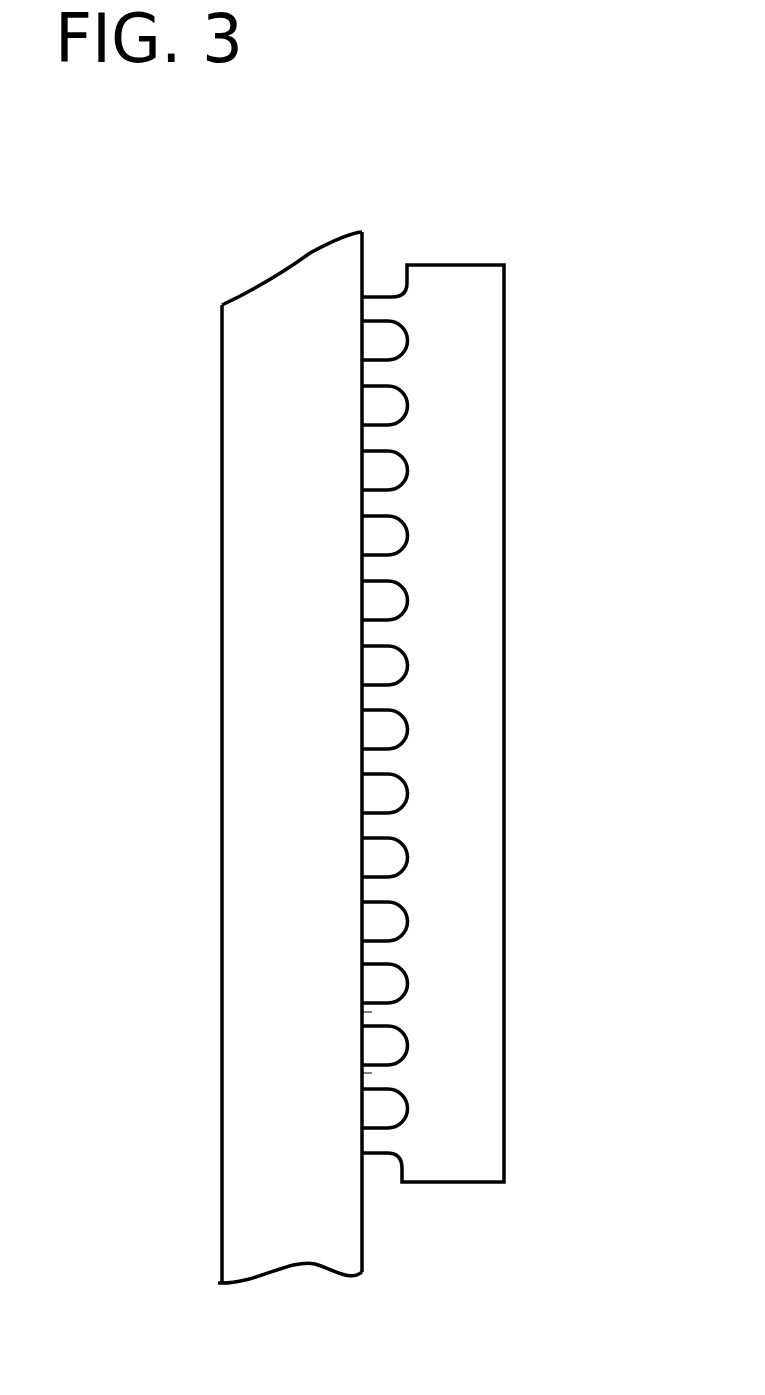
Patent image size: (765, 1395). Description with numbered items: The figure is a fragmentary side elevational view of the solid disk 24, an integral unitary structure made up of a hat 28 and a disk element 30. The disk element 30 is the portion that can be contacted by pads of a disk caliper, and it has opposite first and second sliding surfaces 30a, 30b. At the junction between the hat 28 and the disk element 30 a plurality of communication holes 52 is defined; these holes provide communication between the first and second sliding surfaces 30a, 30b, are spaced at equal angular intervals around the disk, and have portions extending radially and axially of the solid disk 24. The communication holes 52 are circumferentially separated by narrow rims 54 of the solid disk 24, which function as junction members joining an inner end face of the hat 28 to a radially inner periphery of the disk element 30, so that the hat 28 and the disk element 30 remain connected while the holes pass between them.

The solid disk 24 is at (514, 249).
The hat 28 is at (485, 682).
The disk element 30 is at (236, 950).
The first sliding surface 30a is at (221, 612).
The second sliding surface 30b is at (365, 566).
The communication holes 52 is at (390, 920).
The rims 54 is at (372, 1073).